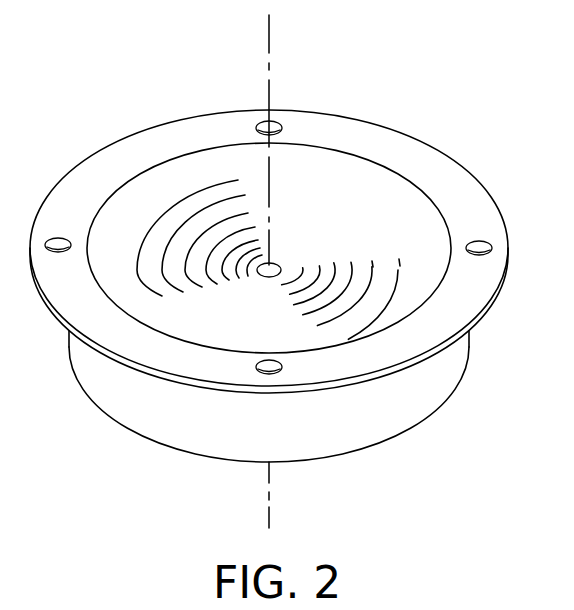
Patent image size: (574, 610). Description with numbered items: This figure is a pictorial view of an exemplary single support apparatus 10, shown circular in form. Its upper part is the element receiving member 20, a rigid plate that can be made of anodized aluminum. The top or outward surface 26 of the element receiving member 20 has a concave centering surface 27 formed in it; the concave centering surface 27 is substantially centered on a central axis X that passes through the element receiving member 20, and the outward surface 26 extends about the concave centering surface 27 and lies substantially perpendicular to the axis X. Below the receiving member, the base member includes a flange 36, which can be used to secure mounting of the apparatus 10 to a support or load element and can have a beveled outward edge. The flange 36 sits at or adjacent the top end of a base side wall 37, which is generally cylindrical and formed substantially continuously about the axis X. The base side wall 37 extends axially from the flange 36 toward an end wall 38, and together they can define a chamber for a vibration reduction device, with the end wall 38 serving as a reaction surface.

The support apparatus 10 is at (487, 114).
The element receiving member 20 is at (435, 217).
The outward surface 26 is at (337, 193).
The concave centering surface 27 is at (382, 207).
The flange 36 is at (218, 122).
The base side wall 37 is at (450, 358).
The end wall 38 is at (295, 462).
The central axis X is at (270, 33).